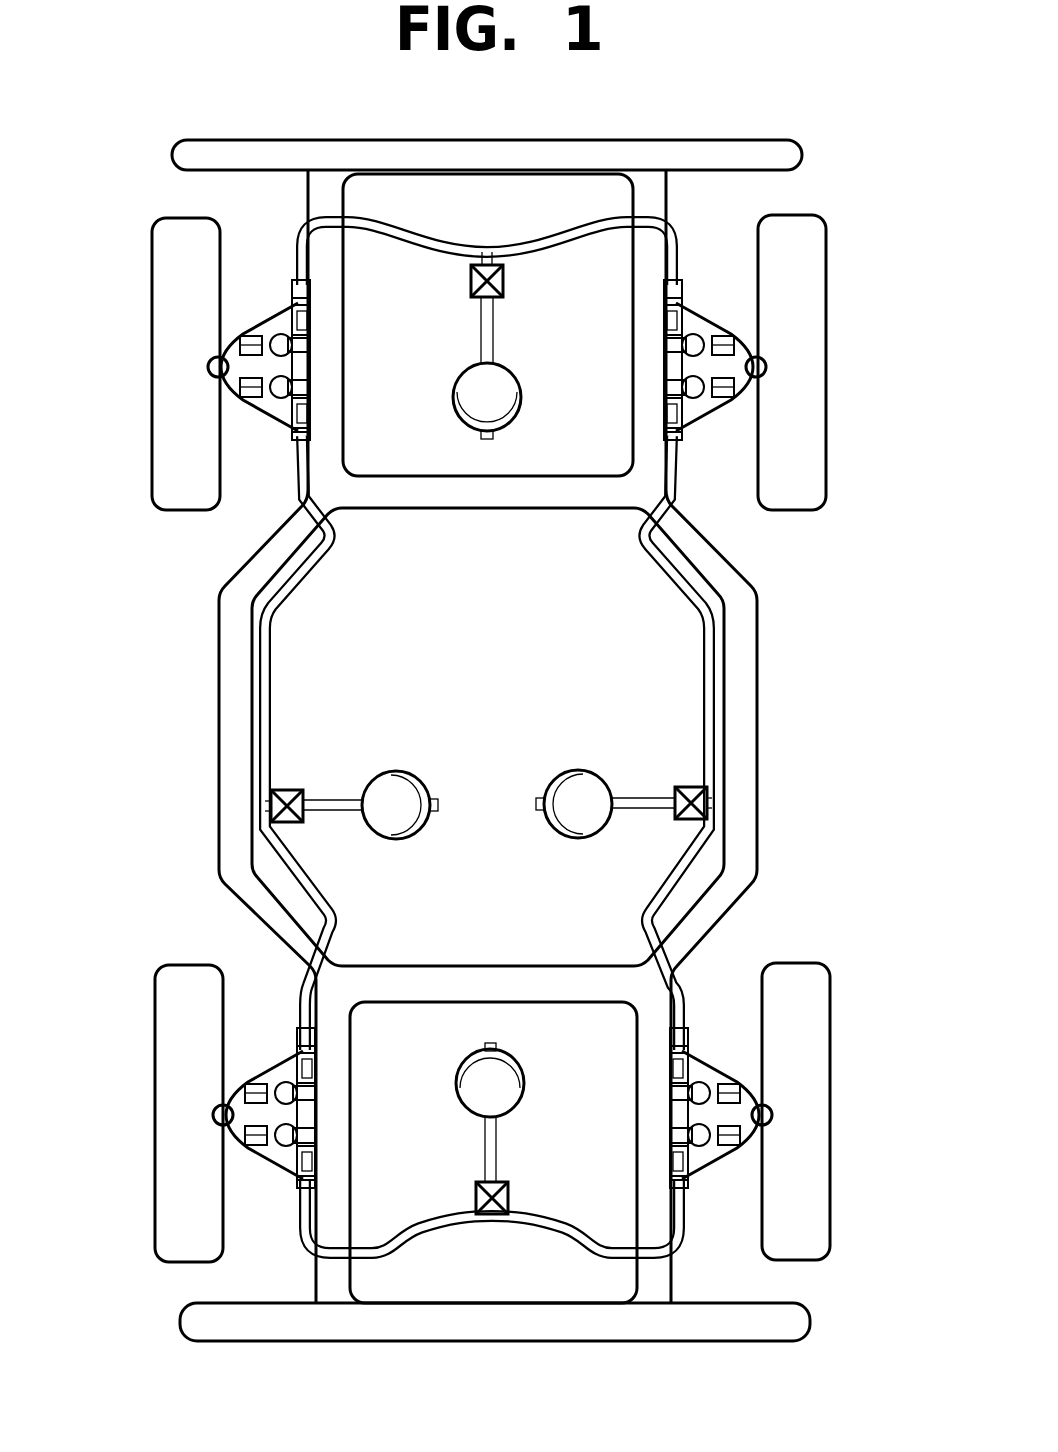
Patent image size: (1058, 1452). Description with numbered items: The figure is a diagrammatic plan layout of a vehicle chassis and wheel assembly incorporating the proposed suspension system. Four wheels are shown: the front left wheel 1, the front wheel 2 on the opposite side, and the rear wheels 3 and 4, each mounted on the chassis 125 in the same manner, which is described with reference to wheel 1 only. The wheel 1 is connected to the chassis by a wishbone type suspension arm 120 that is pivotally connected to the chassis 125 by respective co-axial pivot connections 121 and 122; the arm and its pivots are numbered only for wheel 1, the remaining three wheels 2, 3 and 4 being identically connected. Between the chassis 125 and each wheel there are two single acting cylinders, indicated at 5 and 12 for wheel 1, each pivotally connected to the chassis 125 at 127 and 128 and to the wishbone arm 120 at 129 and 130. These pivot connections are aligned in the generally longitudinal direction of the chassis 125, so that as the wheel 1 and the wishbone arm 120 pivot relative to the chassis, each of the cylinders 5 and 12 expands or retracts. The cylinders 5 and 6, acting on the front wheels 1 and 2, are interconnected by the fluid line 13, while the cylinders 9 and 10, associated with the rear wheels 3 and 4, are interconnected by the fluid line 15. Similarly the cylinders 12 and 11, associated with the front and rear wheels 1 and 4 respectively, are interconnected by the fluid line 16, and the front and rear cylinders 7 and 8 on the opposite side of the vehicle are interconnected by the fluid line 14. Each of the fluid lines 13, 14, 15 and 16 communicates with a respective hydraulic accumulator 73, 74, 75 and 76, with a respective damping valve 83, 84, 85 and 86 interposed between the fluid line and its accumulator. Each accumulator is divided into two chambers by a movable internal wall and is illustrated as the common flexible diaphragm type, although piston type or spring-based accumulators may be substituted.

The front left wheel 1 is at (172, 386).
The front right wheel 2 is at (812, 403).
The rear wheel 3 is at (806, 1118).
The rear wheel 4 is at (197, 1148).
The single acting cylinder 5 is at (270, 338).
The single acting cylinder 6 is at (694, 333).
The single acting cylinder 7 is at (694, 398).
The single acting cylinder 8 is at (700, 1080).
The single acting cylinder 9 is at (700, 1144).
The single acting cylinder 10 is at (285, 1145).
The single acting cylinder 11 is at (284, 1084).
The single acting cylinder 12 is at (278, 398).
The fluid line 13 is at (545, 246).
The fluid line 14 is at (716, 735).
The fluid line 15 is at (424, 1234).
The fluid line 16 is at (255, 716).
The hydraulic accumulator 73 is at (520, 372).
The hydraulic accumulator 74 is at (602, 836).
The hydraulic accumulator 75 is at (522, 1064).
The hydraulic accumulator 76 is at (380, 836).
The damping valve 83 is at (505, 275).
The damping valve 84 is at (691, 787).
The damping valve 85 is at (510, 1196).
The damping valve 86 is at (289, 790).
The wishbone type suspension arm 120 is at (292, 300).
The pivot connection 121 is at (302, 310).
The pivot connection 122 is at (302, 425).
The chassis 125 is at (242, 628).
The pivot connection 127 is at (310, 344).
The pivot connection 128 is at (310, 387).
The pivot connection 129 is at (244, 405).
The pivot connection 130 is at (242, 334).